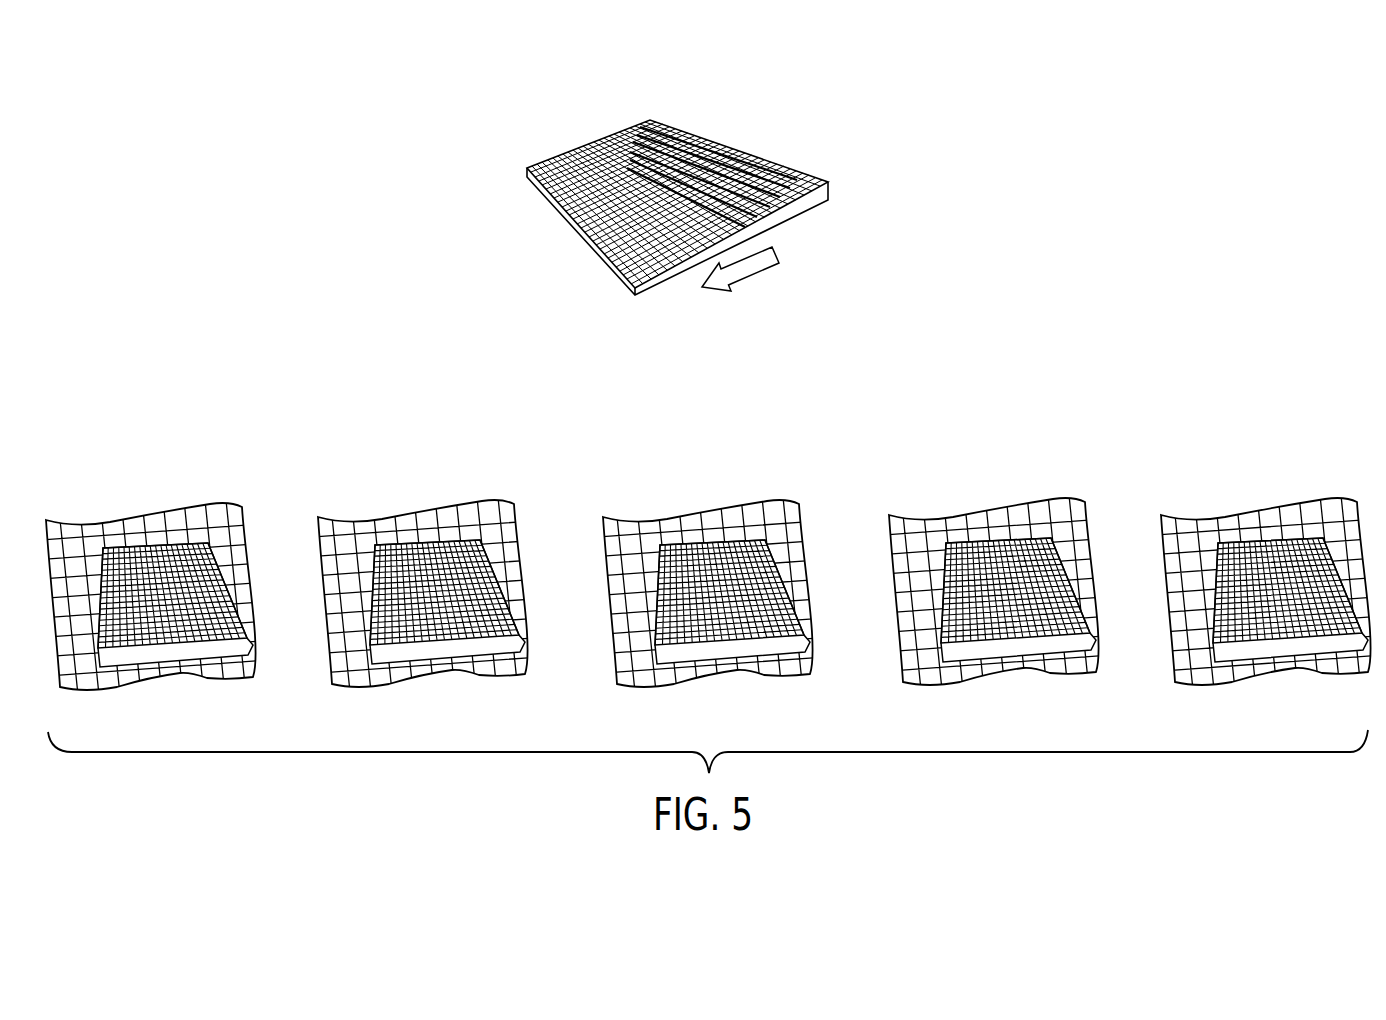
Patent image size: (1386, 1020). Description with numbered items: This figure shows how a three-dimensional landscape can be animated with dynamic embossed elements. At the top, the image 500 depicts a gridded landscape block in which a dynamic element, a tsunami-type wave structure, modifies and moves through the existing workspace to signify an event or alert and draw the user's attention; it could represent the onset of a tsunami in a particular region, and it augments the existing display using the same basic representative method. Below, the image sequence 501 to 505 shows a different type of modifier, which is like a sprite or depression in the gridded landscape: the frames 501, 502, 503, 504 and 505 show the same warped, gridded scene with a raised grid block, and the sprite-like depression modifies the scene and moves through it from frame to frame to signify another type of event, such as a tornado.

The image 500 is at (567, 112).
The image sequence frame 501 is at (122, 475).
The image sequence frame 502 is at (410, 475).
The image sequence frame 503 is at (701, 475).
The image sequence frame 504 is at (980, 475).
The image sequence frame 505 is at (1248, 474).